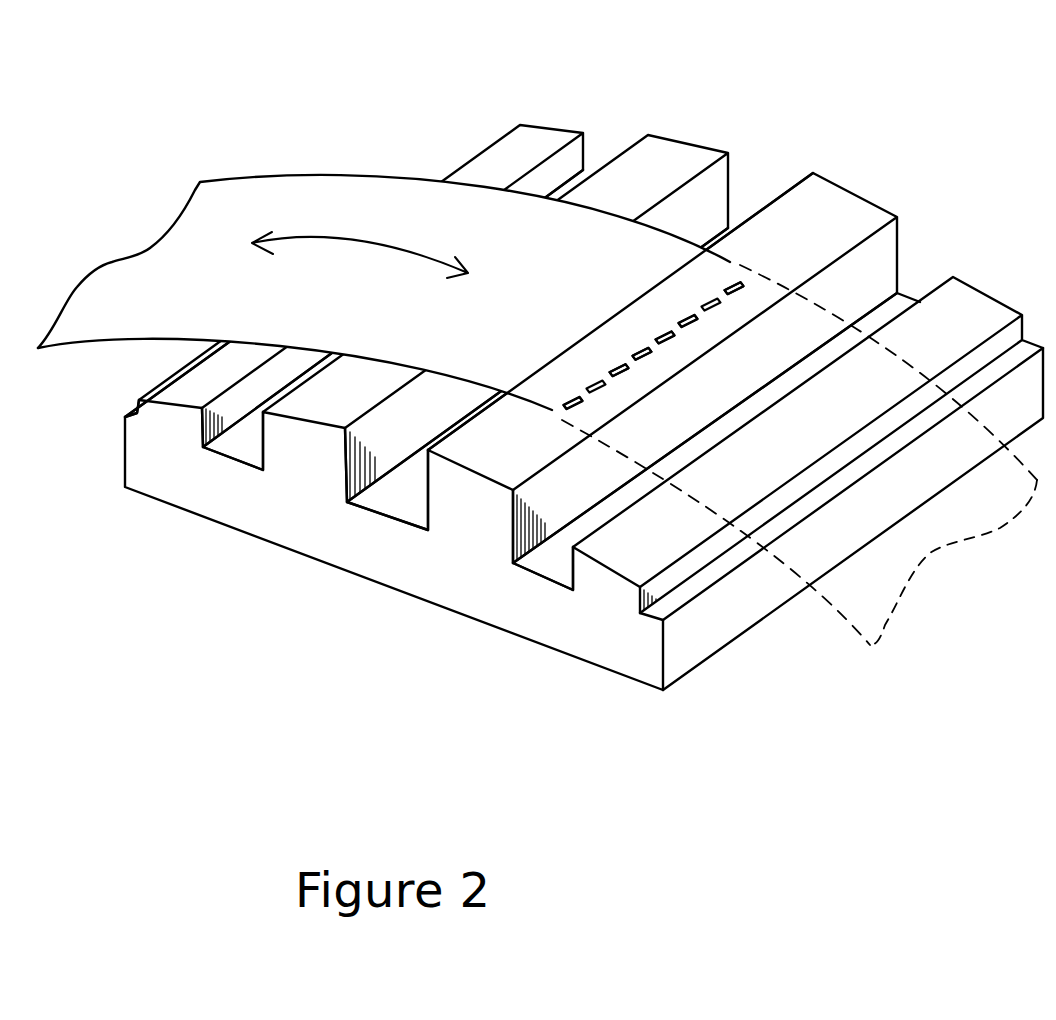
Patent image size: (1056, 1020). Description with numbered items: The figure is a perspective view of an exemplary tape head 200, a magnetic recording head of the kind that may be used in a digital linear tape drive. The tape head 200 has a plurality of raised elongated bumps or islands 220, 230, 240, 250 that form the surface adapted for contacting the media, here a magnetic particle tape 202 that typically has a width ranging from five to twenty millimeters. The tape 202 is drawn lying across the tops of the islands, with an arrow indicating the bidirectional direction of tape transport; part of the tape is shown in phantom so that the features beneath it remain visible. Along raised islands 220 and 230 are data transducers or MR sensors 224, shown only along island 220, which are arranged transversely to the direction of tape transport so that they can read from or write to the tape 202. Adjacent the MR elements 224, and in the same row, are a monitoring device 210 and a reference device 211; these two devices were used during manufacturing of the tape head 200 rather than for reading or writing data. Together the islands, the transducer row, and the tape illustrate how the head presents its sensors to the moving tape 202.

The tape head 200 is at (138, 493).
The tape 202 is at (237, 177).
The monitoring device 210 is at (600, 396).
The reference device 211 is at (563, 405).
The raised island 220 is at (425, 500).
The MR sensors 224 is at (698, 323).
The raised island 230 is at (260, 449).
The raised island 240 is at (563, 568).
The raised island 250 is at (153, 390).